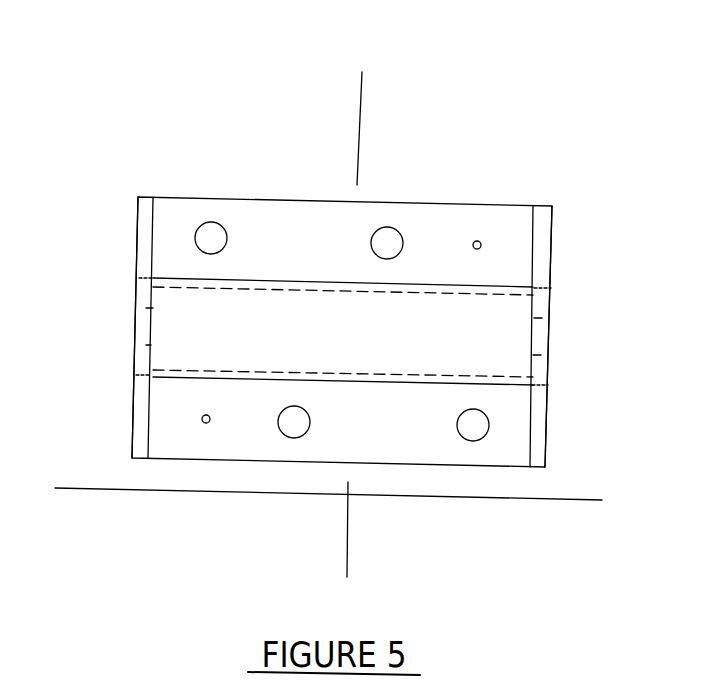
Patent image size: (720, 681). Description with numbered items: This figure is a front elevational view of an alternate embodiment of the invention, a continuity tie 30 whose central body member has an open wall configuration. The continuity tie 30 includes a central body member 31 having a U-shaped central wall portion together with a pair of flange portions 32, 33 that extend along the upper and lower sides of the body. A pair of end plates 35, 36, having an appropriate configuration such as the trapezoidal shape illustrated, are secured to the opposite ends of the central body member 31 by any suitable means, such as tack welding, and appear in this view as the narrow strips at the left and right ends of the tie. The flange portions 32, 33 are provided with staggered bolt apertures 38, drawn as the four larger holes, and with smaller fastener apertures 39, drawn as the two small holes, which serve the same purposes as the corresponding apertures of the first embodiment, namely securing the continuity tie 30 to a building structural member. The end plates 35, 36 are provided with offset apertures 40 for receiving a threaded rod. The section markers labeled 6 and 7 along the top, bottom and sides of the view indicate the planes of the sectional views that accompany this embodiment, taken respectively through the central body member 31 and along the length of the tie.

The continuity tie 30 is at (309, 239).
The central body member 31 is at (413, 227).
The flange portion 32 is at (414, 158).
The flange portion 33 is at (343, 468).
The end plate 35 is at (107, 327).
The end plate 36 is at (600, 336).
The bolt apertures 38 is at (373, 237).
The fastener apertures 39 is at (362, 343).
The offset apertures 40 is at (361, 332).
The section line 6- 6 is at (325, 325).
The section line 7- 7 is at (337, 463).